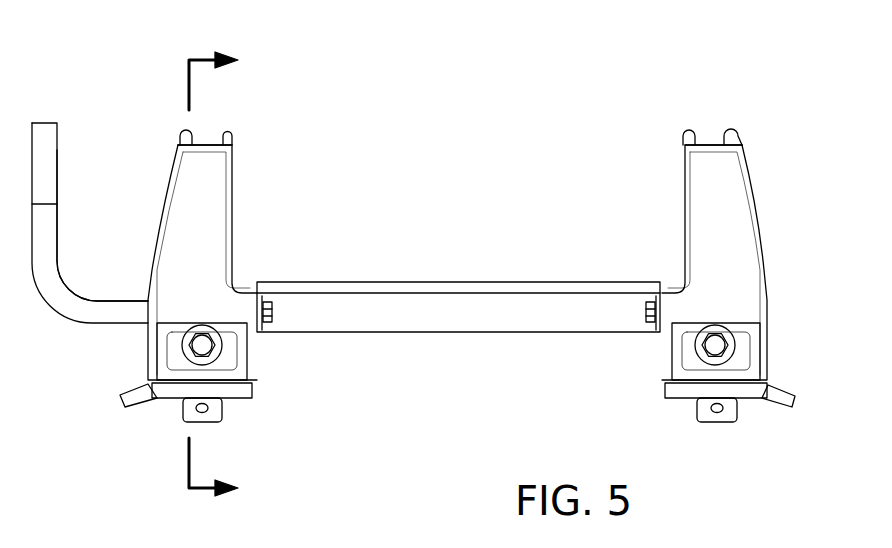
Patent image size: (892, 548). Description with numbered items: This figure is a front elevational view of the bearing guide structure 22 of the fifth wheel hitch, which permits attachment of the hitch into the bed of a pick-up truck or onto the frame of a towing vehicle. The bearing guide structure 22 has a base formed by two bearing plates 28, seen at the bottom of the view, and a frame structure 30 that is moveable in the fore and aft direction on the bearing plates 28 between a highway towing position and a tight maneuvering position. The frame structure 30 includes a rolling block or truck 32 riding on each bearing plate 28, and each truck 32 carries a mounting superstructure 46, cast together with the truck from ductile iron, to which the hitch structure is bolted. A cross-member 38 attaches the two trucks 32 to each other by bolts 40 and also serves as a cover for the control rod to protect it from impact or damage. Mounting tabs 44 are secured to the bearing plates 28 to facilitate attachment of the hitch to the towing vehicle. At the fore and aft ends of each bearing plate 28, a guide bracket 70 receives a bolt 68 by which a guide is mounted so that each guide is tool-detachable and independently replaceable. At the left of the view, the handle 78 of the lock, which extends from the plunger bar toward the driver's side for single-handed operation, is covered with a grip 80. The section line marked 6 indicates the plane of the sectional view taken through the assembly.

The section line 6- 6 is at (206, 275).
The bearing guide structure 22 is at (612, 66).
The bearing plate 28 is at (158, 394).
The frame structure 30 is at (794, 160).
The truck 32 is at (227, 243).
The cross-member 38 is at (358, 287).
The bolt 40 is at (273, 322).
The mounting tab 44 is at (210, 419).
The mounting superstructure 46 is at (210, 207).
The bolt 68 is at (205, 352).
The guide bracket 70 is at (162, 369).
The handle 78 is at (50, 253).
The grip 80 is at (50, 153).